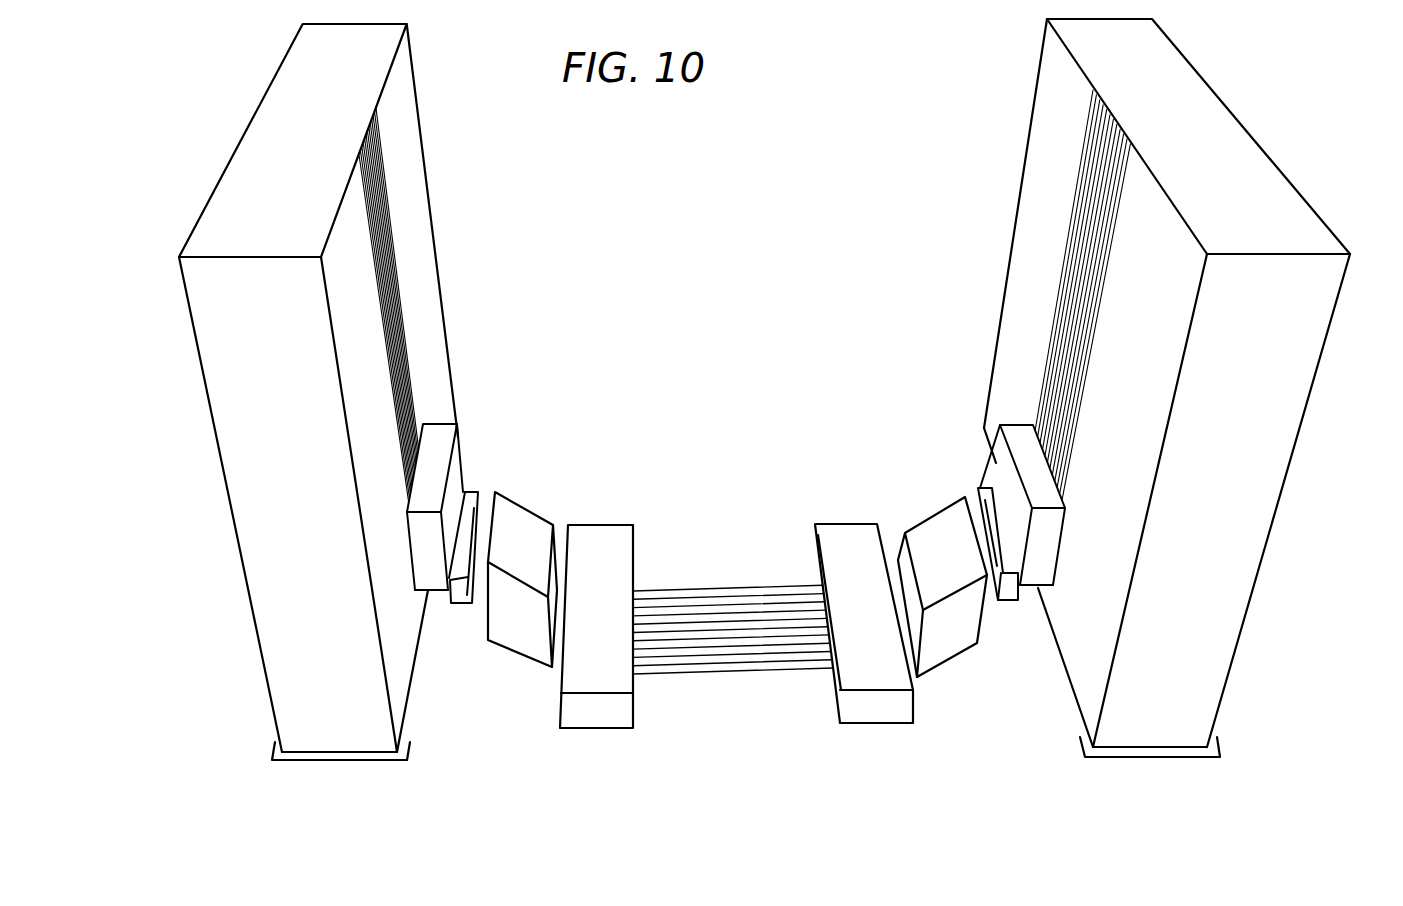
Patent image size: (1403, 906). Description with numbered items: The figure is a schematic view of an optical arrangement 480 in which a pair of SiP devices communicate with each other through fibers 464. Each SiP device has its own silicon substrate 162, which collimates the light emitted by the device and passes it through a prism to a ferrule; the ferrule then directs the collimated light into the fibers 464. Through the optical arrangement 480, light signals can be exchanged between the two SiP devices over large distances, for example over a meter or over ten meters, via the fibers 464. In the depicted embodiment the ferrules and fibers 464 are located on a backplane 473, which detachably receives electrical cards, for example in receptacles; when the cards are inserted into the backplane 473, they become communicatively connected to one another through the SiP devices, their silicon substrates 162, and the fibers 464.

The optical arrangement 480 is at (180, 109).
The backplane 473 is at (746, 571).
The fibers 464 is at (726, 661).
The silicon substrate 162 is at (1005, 601).